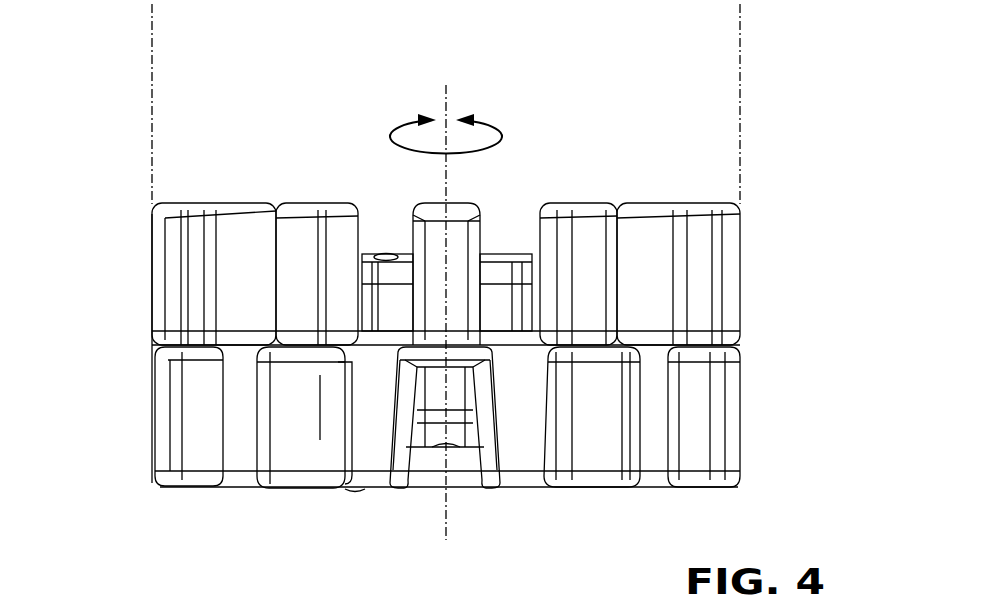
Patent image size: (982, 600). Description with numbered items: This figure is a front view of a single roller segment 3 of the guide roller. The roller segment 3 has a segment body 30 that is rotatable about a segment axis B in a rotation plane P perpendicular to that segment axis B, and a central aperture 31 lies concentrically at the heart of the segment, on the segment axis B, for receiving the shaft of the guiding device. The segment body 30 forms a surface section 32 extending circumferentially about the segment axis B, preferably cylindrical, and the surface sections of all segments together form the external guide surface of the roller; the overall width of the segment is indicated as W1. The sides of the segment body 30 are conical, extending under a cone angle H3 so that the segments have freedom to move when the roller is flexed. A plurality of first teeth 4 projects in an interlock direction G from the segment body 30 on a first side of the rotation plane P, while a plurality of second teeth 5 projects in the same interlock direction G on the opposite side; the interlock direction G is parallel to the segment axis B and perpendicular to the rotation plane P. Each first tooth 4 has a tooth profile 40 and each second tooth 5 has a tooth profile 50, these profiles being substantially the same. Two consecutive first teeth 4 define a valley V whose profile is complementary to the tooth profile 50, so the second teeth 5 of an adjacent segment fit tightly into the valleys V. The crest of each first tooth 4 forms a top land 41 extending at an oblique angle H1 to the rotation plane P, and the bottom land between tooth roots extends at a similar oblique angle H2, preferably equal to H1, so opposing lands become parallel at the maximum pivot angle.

The roller segment 3 is at (130, 114).
The first tooth 4 is at (170, 482).
The second tooth 5 is at (302, 202).
The segment body 30 is at (508, 268).
The central aperture 31 is at (440, 450).
The surface section 32 is at (242, 482).
The tooth profile 40 is at (340, 462).
The top land 41 is at (700, 491).
The tooth profile 50 is at (394, 248).
The width W1 is at (740, 29).
The oblique angle H1 is at (735, 480).
The oblique angle H2 is at (740, 345).
The cone angle H3 is at (420, 245).
The rotation plane P is at (155, 345).
The interlock direction G is at (69, 362).
The valley V is at (360, 48).
The segment axis B is at (447, 567).